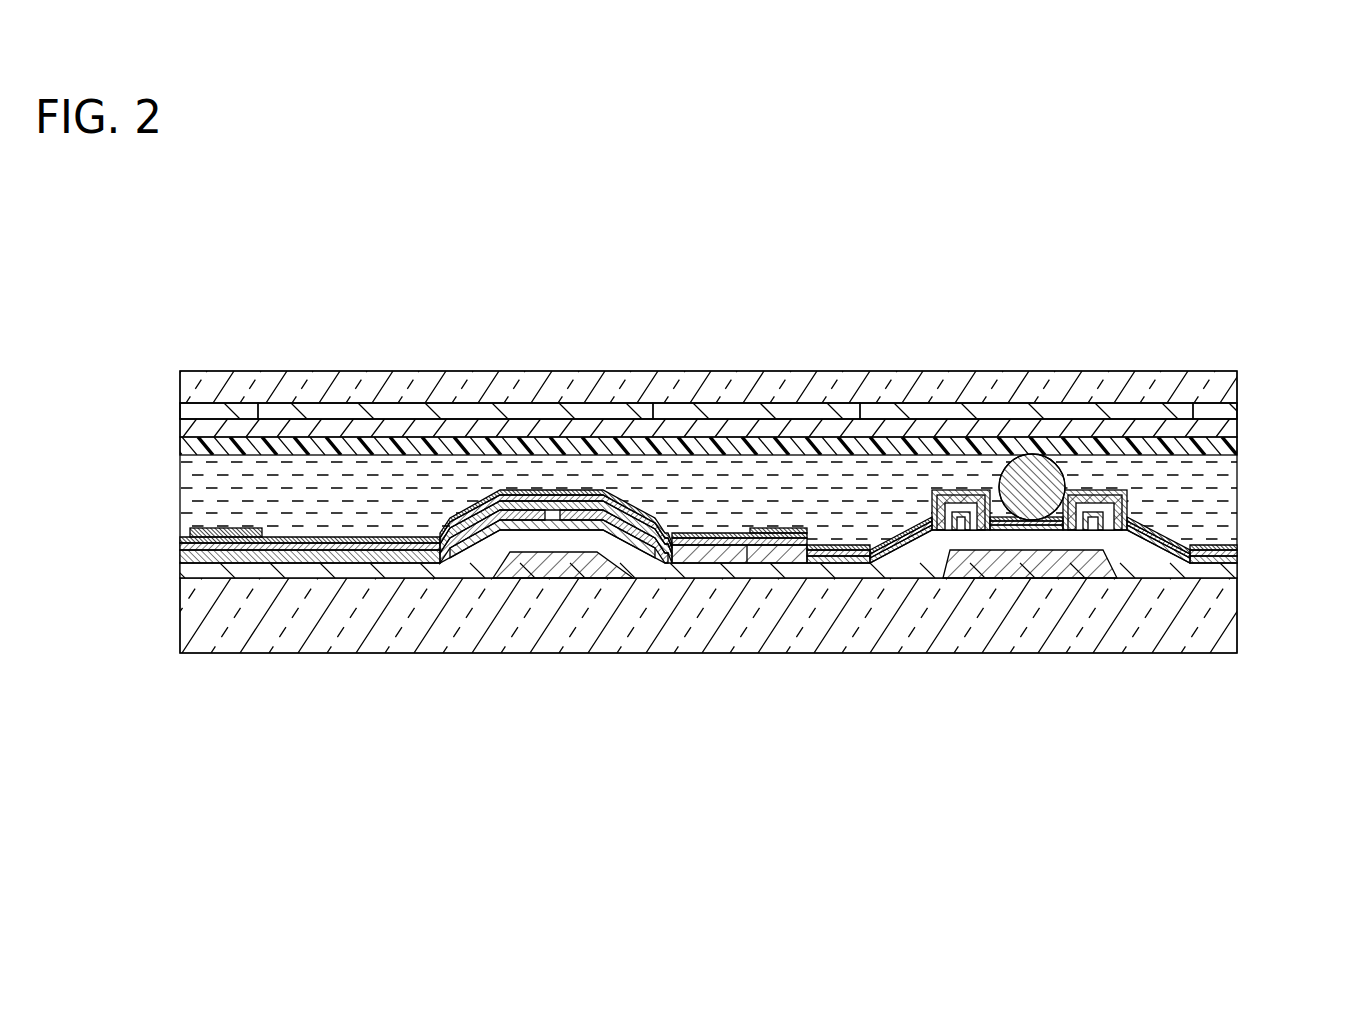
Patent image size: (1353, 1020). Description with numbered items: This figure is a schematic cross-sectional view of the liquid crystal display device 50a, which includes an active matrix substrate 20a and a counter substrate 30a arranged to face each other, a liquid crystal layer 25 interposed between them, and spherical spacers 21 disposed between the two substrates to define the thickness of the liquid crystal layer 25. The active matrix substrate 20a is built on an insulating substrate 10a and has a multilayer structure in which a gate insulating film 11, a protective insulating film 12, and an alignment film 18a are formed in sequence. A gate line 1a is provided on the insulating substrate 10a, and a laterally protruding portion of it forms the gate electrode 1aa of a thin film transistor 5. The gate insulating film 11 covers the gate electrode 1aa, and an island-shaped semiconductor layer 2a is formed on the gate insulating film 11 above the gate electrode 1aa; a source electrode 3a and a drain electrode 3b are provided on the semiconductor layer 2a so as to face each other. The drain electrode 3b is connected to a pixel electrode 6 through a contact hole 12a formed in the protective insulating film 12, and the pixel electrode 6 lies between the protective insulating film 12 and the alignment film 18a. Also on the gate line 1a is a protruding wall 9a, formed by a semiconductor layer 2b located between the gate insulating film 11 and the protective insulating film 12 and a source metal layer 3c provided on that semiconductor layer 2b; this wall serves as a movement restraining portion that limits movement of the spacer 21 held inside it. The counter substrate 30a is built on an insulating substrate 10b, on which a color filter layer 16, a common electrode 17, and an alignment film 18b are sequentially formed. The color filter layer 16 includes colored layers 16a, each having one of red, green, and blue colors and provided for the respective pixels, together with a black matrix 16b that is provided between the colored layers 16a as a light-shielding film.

The liquid crystal display device 50a is at (346, 345).
The counter substrate 30a is at (168, 371).
The active matrix substrate 20a is at (168, 546).
The liquid crystal layer 25 is at (168, 456).
The insulating substrate 10a is at (1225, 645).
The insulating substrate 10b is at (1232, 392).
The gate insulating film 11 is at (1230, 571).
The protective insulating film 12 is at (1237, 562).
The contact hole 12a is at (745, 548).
The color filter layer 16 is at (727, 296).
The colored layers 16a is at (209, 413).
The black matrix 16b is at (530, 412).
The common electrode 17 is at (1227, 428).
The alignment film 18a is at (1237, 547).
The alignment film 18b is at (1227, 445).
The thin film transistor 5 is at (548, 482).
The semiconductor layer 2a is at (525, 556).
The gate electrode 1aa is at (578, 533).
The source electrode 3a is at (462, 548).
The drain electrode 3b is at (638, 540).
The pixel electrode 6 is at (1237, 555).
The protruding wall 9a is at (998, 706).
The source metal layer 3c is at (948, 530).
The semiconductor layer 2b is at (963, 517).
The spherical spacer 21 is at (1031, 500).
The gate line 1a is at (1083, 567).